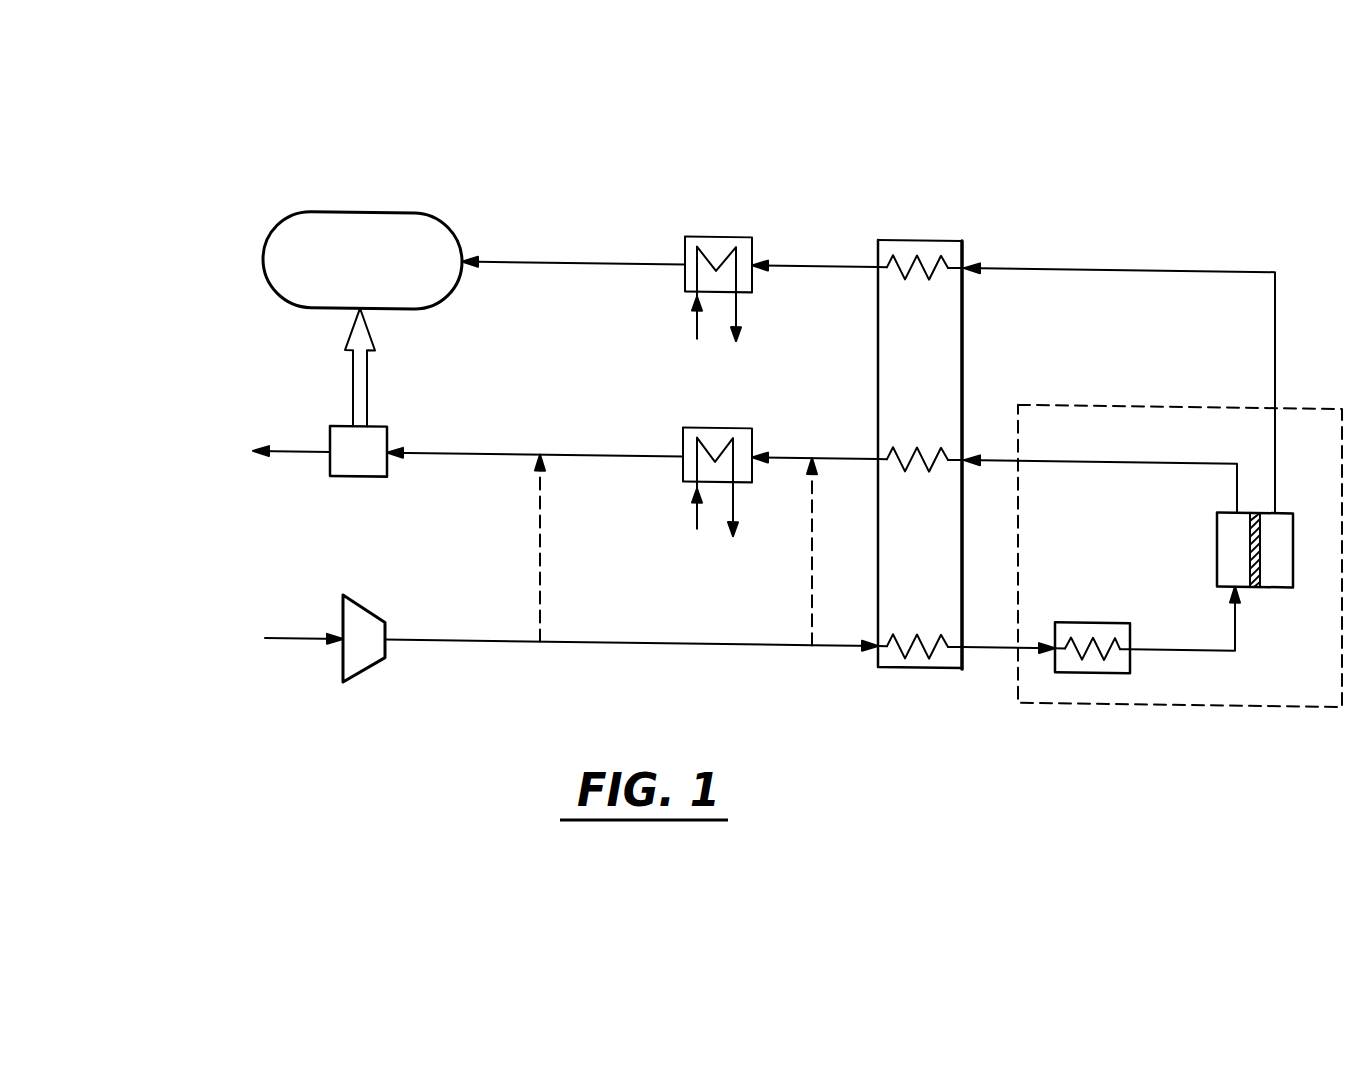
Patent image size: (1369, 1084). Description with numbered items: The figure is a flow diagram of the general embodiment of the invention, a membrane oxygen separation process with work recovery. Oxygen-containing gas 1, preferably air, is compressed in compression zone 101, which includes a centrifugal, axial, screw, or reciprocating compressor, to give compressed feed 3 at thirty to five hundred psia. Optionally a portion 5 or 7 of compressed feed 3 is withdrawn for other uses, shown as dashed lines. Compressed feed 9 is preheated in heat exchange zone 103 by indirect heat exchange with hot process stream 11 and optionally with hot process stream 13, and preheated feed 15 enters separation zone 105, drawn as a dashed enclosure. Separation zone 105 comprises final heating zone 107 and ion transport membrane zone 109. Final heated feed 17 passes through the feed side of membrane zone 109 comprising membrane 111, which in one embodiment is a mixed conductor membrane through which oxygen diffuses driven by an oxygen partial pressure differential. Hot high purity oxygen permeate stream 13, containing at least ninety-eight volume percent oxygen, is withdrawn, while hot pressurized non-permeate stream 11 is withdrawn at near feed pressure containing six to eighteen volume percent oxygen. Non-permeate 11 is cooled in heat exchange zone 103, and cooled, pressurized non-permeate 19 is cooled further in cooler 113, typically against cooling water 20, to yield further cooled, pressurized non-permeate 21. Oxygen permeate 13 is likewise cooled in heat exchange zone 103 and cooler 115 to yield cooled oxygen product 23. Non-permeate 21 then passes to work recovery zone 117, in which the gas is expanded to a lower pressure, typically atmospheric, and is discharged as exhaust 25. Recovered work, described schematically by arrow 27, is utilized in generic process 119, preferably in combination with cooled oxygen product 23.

The oxygen-containing gas 1 is at (290, 638).
The compressed feed 3 is at (470, 645).
The portion of compressed feed 5 is at (541, 548).
The portion of compressed feed 7 is at (810, 605).
The compressed feed 9 is at (836, 648).
The hot pressurized non-permeate stream 11 is at (1002, 460).
The oxygen permeate stream 13 is at (1092, 266).
The preheated feed 15 is at (983, 648).
The final heated feed 17 is at (1216, 647).
The cooled pressurized non-permeate 19 is at (796, 456).
The cooling water 20 is at (737, 495).
The further cooled pressurized non-permeate 21 is at (598, 456).
The cooled oxygen product 23 is at (575, 262).
The exhaust 25 is at (307, 452).
The recovered work 27 is at (369, 384).
The compression zone 101 is at (366, 670).
The heat exchange zone 103 is at (878, 335).
The separation zone 105 is at (1165, 716).
The final heating zone 107 is at (1096, 619).
The ion transport membrane zone 109 is at (1236, 578).
The ion transport membrane 111 is at (1248, 542).
The cooler 113 is at (714, 452).
The cooler 115 is at (722, 238).
The work recovery zone 117 is at (364, 484).
The generic process 119 is at (334, 278).